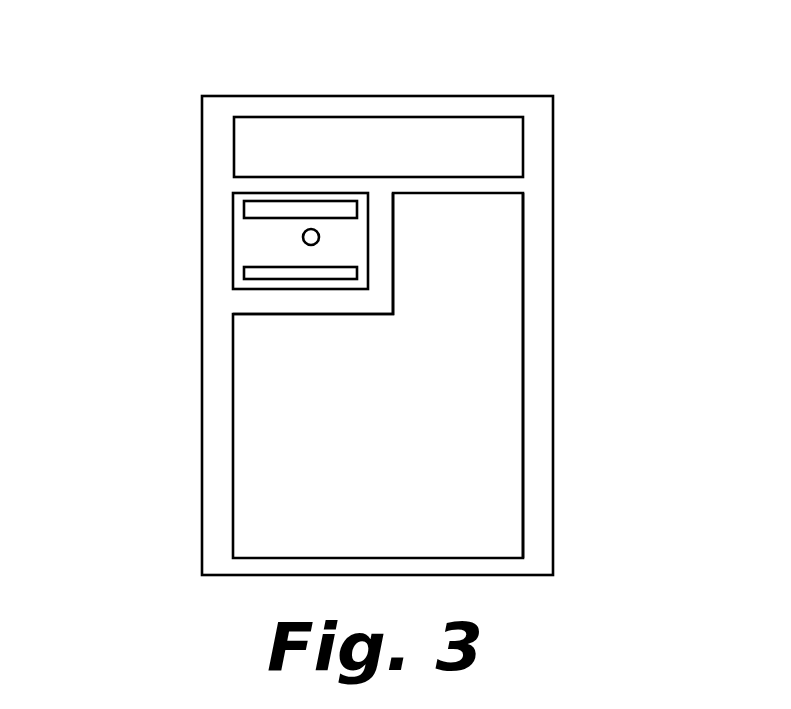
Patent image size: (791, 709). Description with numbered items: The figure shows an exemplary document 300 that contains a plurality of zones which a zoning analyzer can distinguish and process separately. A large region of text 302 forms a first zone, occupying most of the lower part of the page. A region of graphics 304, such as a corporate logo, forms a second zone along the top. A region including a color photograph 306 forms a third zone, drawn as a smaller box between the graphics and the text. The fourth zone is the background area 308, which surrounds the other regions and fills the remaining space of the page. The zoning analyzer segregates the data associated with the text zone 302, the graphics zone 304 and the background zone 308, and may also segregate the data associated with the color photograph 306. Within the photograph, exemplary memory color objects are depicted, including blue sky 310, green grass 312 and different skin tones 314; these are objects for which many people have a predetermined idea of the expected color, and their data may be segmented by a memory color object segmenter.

The document 300 is at (613, 62).
The region of text 302 is at (288, 428).
The region of graphics 304 is at (503, 151).
The color photograph 306 is at (233, 204).
The background area 308 is at (383, 258).
The blue sky 310 is at (308, 209).
The green grass 312 is at (258, 272).
The skin tones 314 is at (303, 237).